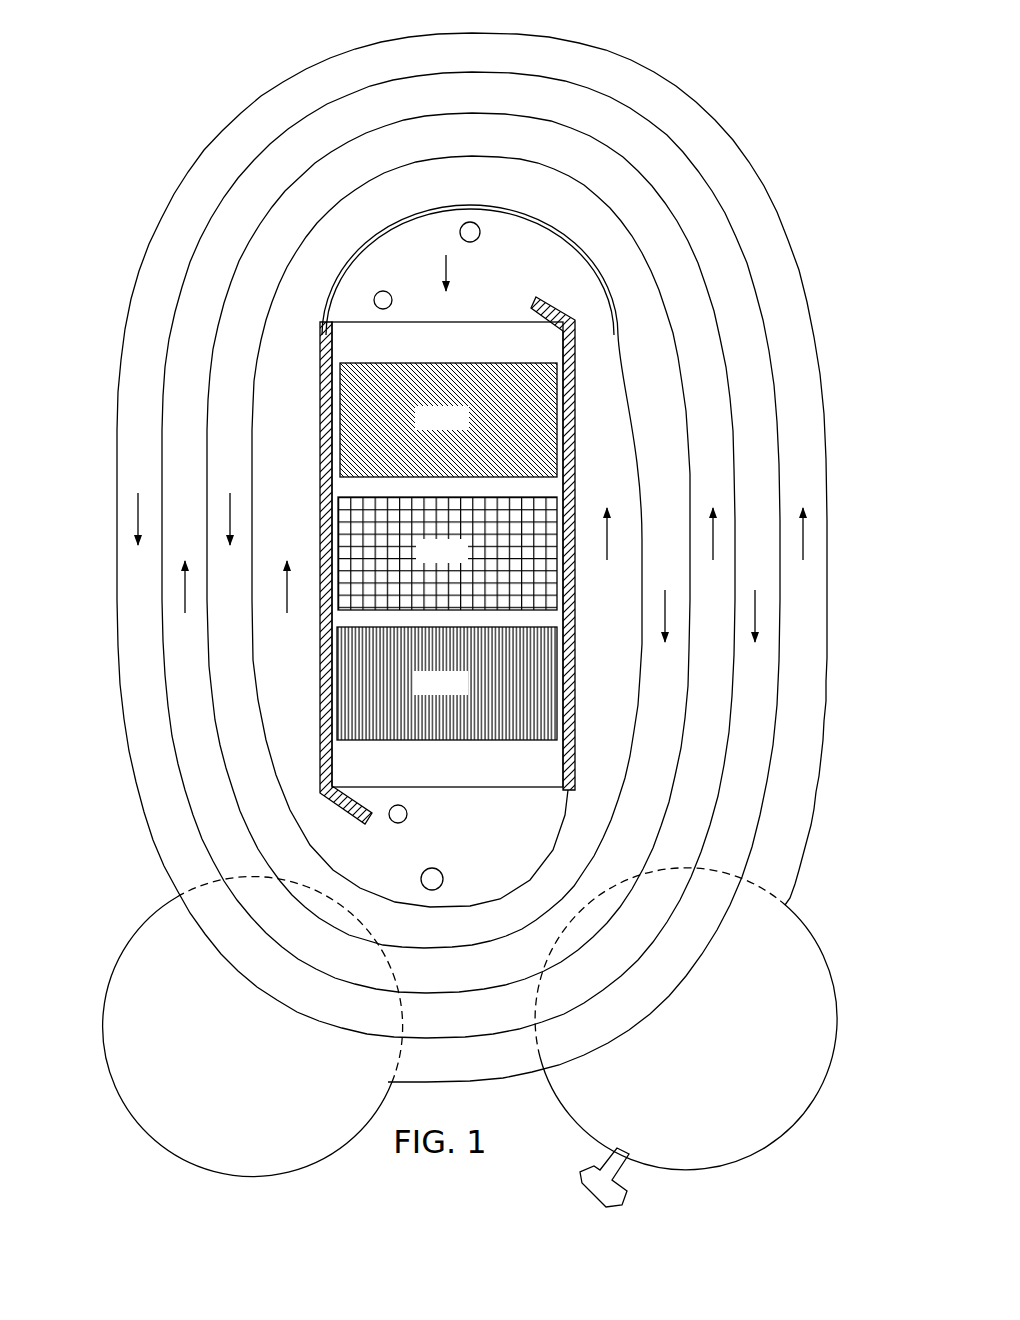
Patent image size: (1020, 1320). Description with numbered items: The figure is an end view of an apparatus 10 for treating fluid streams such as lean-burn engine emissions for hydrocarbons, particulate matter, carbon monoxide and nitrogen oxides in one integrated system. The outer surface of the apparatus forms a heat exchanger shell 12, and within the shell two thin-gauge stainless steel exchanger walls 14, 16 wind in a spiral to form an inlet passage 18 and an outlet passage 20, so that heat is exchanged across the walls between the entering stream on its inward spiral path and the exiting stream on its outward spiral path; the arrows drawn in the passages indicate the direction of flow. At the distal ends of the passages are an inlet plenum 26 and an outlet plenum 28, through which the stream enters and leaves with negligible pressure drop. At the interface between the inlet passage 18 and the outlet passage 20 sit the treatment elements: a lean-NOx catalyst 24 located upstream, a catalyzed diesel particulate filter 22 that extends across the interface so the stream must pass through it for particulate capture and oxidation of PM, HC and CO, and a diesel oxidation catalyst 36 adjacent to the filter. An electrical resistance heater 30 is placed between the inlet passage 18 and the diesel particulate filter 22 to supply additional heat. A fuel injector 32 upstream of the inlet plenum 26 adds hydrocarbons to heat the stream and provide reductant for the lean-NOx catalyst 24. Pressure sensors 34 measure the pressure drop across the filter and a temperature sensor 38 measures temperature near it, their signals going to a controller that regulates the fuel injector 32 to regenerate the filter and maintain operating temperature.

The apparatus 10 is at (158, 156).
The heat exchanger shell 12 is at (149, 229).
The exchanger wall 14 is at (771, 191).
The exchanger wall 16 is at (750, 263).
The inlet passage 18 is at (801, 427).
The outlet passage 20 is at (765, 483).
The catalyzed diesel particulate filter 22 is at (338, 514).
The lean-NOx catalyst 24 is at (340, 394).
The inlet plenum 26 is at (808, 927).
The outlet plenum 28 is at (129, 941).
The electrical resistance heater 30 is at (482, 229).
The fuel injector 32 is at (628, 1199).
The pressure sensors 34 is at (374, 301).
The diesel oxidation catalyst 36 is at (337, 672).
The temperature sensor 38 is at (432, 868).